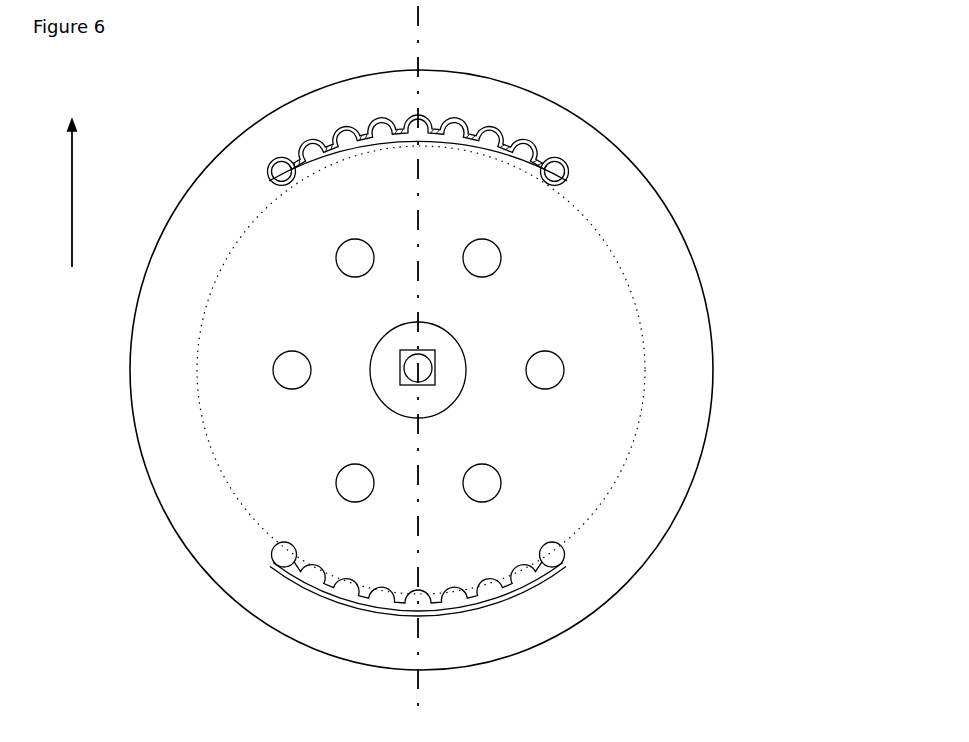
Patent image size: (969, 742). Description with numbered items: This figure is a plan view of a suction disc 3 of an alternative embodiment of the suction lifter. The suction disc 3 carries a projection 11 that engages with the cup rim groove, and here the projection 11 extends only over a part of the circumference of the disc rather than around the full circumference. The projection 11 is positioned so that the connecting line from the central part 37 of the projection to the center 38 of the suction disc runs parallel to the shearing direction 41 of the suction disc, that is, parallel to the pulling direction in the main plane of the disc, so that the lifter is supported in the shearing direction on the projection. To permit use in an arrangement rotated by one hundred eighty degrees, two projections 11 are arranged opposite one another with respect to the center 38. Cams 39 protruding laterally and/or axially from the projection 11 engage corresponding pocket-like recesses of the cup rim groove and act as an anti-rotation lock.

The suction disc 3 is at (563, 463).
The projection 11 is at (283, 176).
The central part of the projection 37 is at (418, 20).
The center of the suction disc 38 is at (418, 368).
The cams 39 is at (563, 170).
The shearing direction 41 is at (72, 185).